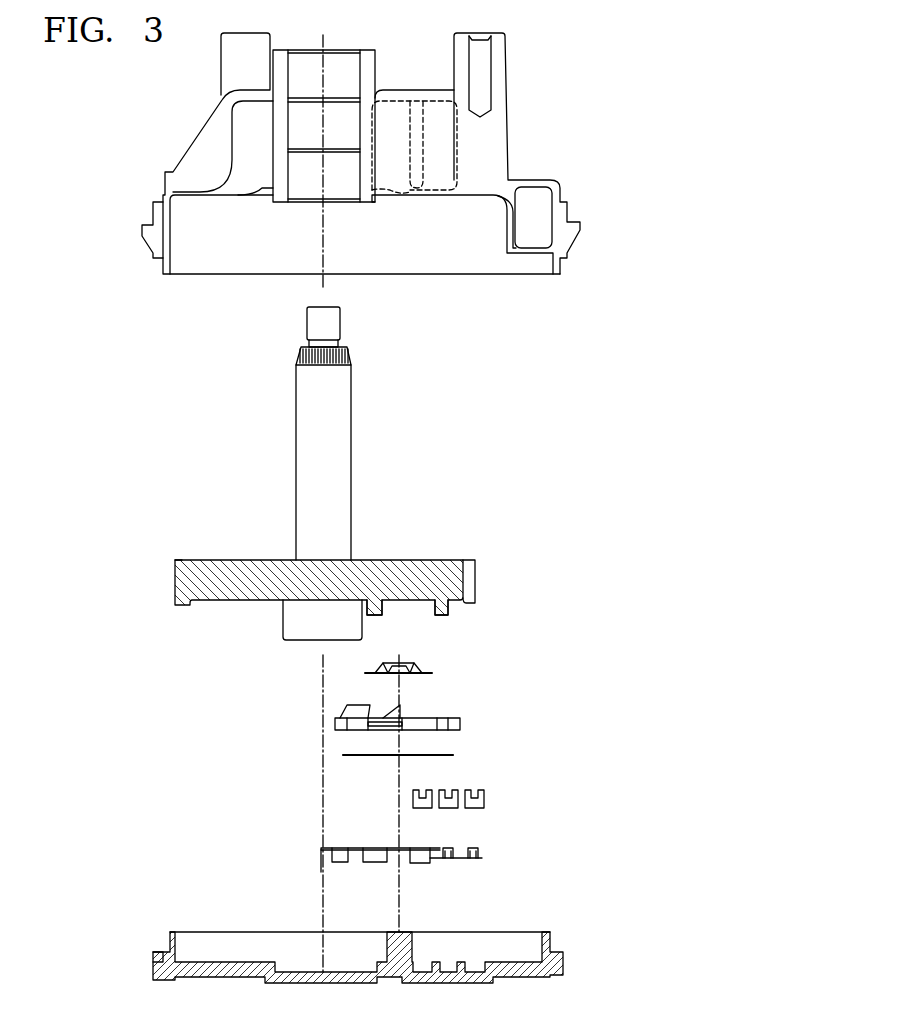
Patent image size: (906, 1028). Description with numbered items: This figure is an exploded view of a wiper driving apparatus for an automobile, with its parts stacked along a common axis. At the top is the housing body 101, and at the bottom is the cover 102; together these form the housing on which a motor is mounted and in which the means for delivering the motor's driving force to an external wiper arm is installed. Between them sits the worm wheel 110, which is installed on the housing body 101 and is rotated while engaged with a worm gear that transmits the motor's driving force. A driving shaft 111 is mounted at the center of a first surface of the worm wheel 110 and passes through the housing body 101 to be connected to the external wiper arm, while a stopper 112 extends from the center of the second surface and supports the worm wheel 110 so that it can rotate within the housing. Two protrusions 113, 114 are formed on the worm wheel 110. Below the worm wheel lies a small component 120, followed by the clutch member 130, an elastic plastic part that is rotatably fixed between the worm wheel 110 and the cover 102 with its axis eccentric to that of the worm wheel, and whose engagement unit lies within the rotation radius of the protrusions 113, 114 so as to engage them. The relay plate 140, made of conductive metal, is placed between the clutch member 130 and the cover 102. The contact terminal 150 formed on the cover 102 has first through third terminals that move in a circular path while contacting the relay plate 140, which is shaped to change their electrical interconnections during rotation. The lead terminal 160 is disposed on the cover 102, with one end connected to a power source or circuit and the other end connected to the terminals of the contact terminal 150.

The housing body 101 is at (493, 145).
The cover 102 is at (550, 938).
The worm wheel 110 is at (356, 588).
The driving shaft 111 is at (385, 442).
The stopper 112 is at (273, 618).
The protrusion 113 is at (380, 608).
The protrusion 114 is at (447, 607).
The spring plate 120 is at (432, 673).
The clutch member 130 is at (470, 727).
The relay plate 140 is at (470, 757).
The contact terminal 150 is at (490, 803).
The lead terminal 160 is at (488, 850).